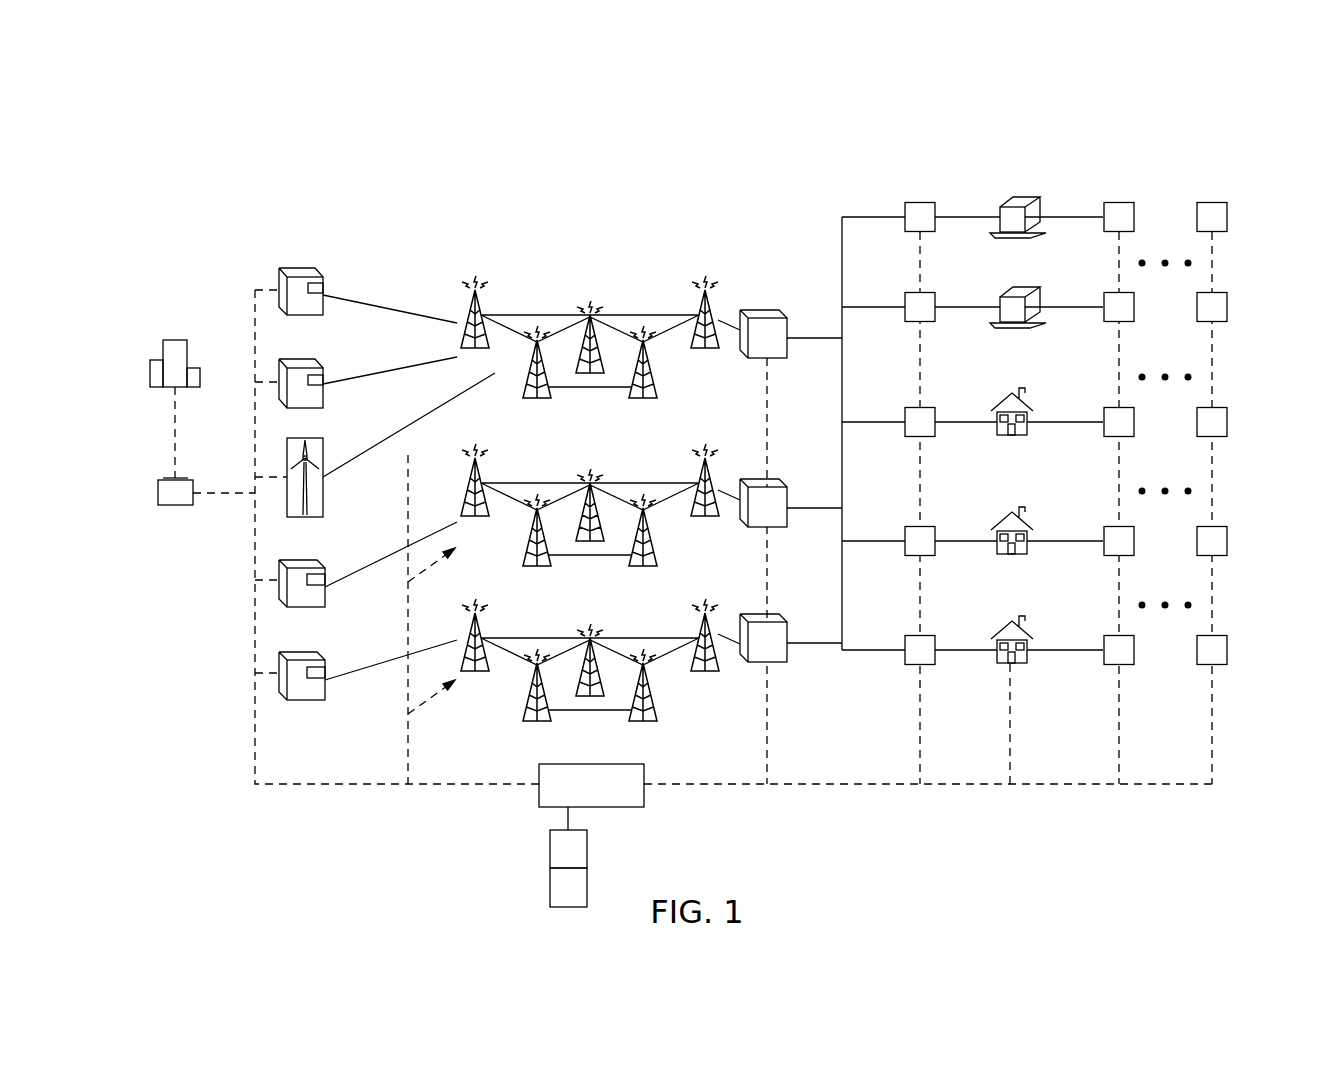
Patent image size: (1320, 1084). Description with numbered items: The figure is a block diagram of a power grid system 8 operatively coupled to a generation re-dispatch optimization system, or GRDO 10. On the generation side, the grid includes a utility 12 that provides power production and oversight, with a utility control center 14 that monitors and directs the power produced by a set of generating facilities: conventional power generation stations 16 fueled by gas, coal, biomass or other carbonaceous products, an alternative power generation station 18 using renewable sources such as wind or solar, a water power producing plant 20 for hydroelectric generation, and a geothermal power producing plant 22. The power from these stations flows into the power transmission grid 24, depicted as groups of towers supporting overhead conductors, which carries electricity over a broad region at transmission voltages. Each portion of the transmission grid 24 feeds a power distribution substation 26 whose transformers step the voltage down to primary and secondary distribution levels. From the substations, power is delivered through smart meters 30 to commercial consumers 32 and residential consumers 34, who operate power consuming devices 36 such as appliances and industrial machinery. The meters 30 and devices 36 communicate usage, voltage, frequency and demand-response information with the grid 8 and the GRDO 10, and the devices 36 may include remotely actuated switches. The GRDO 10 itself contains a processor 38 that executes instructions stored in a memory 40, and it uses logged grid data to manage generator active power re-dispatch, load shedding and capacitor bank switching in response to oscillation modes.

The power grid system 8 is at (218, 170).
The generation re-dispatch optimization (GRDO) system 10 is at (645, 795).
The utility 12 is at (176, 340).
The utility control center 14 is at (178, 505).
The power generation station 16 is at (296, 268).
The alternative power generation station 18 is at (310, 438).
The water power producing plant 20 is at (303, 560).
The geothermal power producing plant 22 is at (303, 660).
The power transmission grid 24 is at (547, 246).
The power distribution substation 26 is at (760, 310).
The smart meter 30 is at (920, 203).
The commercial consumer 32 is at (1027, 197).
The residential consumer 34 is at (1015, 392).
The power consuming device 36 is at (1119, 203).
The processor 38 is at (550, 850).
The memory 40 is at (550, 889).